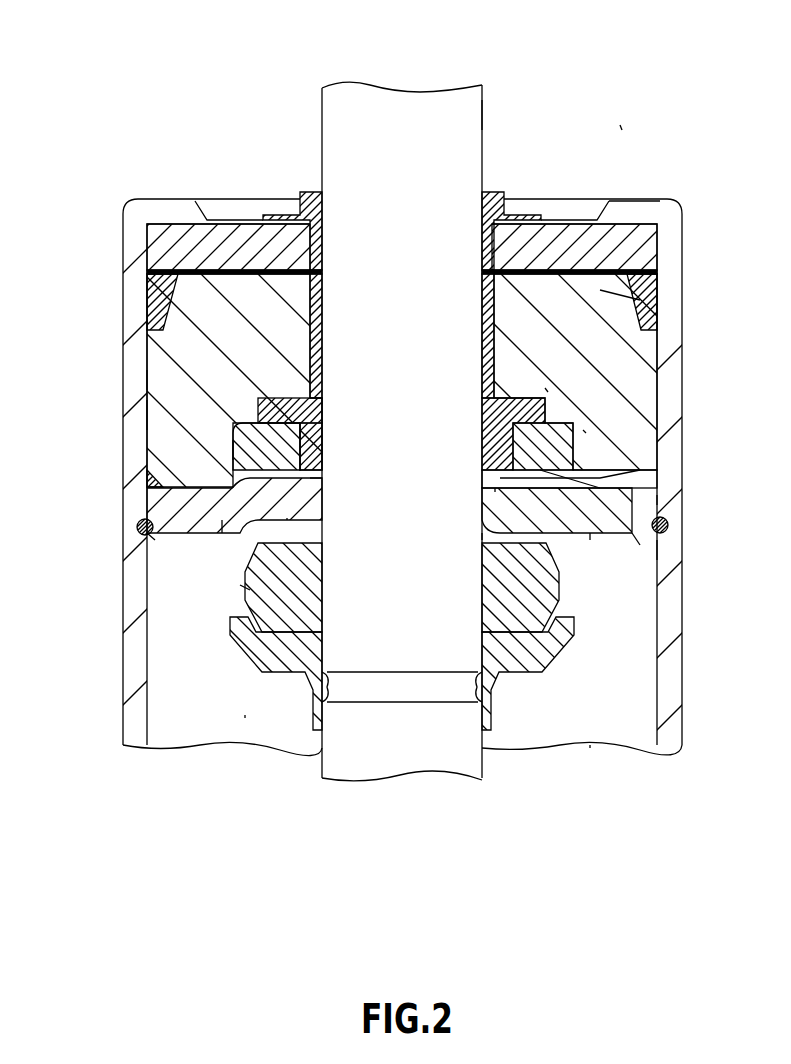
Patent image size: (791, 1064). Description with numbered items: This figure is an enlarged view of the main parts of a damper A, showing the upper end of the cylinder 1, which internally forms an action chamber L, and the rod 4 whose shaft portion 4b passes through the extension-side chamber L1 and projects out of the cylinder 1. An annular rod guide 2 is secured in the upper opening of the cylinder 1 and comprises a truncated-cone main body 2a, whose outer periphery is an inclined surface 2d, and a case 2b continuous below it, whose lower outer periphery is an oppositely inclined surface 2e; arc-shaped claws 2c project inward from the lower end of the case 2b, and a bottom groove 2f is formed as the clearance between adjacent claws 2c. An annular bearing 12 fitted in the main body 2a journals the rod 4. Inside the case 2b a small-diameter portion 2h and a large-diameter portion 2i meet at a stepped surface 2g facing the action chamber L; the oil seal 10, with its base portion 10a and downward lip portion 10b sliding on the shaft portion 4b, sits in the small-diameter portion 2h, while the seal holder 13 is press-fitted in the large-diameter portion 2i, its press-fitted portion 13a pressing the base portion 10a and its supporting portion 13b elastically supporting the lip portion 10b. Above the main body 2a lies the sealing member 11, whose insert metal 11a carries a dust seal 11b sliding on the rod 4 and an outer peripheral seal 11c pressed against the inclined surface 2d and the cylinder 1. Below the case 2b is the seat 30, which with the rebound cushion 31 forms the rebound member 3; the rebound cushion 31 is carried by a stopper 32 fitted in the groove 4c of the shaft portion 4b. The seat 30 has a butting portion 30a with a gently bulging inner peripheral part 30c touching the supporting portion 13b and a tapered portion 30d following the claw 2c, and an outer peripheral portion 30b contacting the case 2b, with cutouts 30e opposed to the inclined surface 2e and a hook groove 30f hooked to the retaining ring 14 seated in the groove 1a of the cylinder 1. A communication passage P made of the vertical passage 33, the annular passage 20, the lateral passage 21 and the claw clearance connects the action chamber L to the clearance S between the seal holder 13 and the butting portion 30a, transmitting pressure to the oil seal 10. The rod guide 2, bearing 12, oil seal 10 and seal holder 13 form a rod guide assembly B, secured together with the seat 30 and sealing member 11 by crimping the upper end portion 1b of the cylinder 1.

The cylinder 1 is at (123, 713).
The groove 1a is at (662, 540).
The upper end portion 1b is at (620, 200).
The rod guide 2 is at (147, 345).
The main body 2a is at (640, 300).
The case 2b is at (165, 418).
The claw 2c is at (222, 525).
The inclined surface 2d is at (160, 302).
The inclined surface 2e is at (155, 480).
The bottom groove 2f is at (645, 468).
The stepped surface 2g is at (235, 448).
The small-diameter portion 2h is at (305, 405).
The large-diameter portion 2i is at (305, 452).
The rebound member 3 is at (238, 600).
The rod 4 is at (320, 110).
The shaft portion 4b is at (470, 115).
The groove 4c is at (402, 690).
The oil seal 10 is at (550, 388).
The base portion 10a is at (322, 362).
The lip portion 10b is at (300, 440).
The sealing member 11 is at (575, 200).
The insert metal 11a is at (222, 235).
The dust seal 11b is at (503, 200).
The outer peripheral seal 11c is at (147, 283).
The bearing 12 is at (490, 320).
The seal holder 13 is at (585, 430).
The press-fitted portion 13a is at (485, 420).
The supporting portion 13b is at (495, 458).
The retaining ring 14 is at (140, 532).
The annular passage 20 is at (655, 478).
The lateral passage 21 is at (608, 520).
The seat 30 is at (147, 507).
The butting portion 30a is at (287, 518).
The outer peripheral portion 30b is at (590, 540).
The inner peripheral part 30c is at (322, 472).
The tapered portion 30d is at (482, 538).
The cutout 30e is at (640, 545).
The hook groove 30f is at (155, 540).
The rebound cushion 31 is at (245, 588).
The stopper 32 is at (512, 690).
The vertical passage 33 is at (668, 512).
The damper A is at (625, 125).
The rod guide assembly B is at (147, 378).
The clearance S is at (495, 488).
The communication passage P is at (668, 500).
The action chamber L is at (245, 715).
The extension-side chamber L1 is at (590, 745).